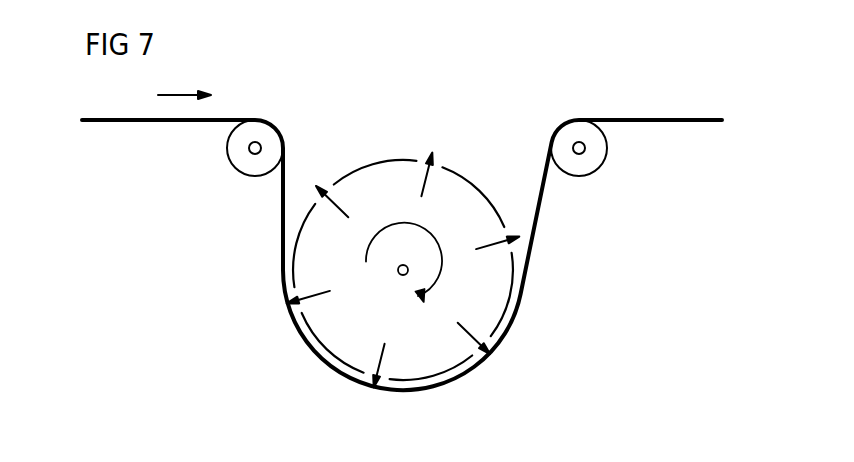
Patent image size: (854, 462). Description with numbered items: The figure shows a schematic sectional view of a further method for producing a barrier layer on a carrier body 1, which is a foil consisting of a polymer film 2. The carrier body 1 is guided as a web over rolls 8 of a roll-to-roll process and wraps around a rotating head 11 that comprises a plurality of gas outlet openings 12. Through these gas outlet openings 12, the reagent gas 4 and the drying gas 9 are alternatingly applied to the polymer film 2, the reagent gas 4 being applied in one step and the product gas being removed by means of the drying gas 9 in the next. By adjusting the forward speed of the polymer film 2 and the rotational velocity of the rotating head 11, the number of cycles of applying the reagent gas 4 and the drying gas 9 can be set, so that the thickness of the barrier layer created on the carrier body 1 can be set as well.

The carrier body 1 is at (402, 227).
The polymer film 2 is at (637, 118).
The reagent gas 4 is at (418, 187).
The rolls 8 is at (255, 167).
The drying gas 9 is at (410, 263).
The rotating head 11 is at (386, 166).
The gas outlet openings 12 is at (331, 185).